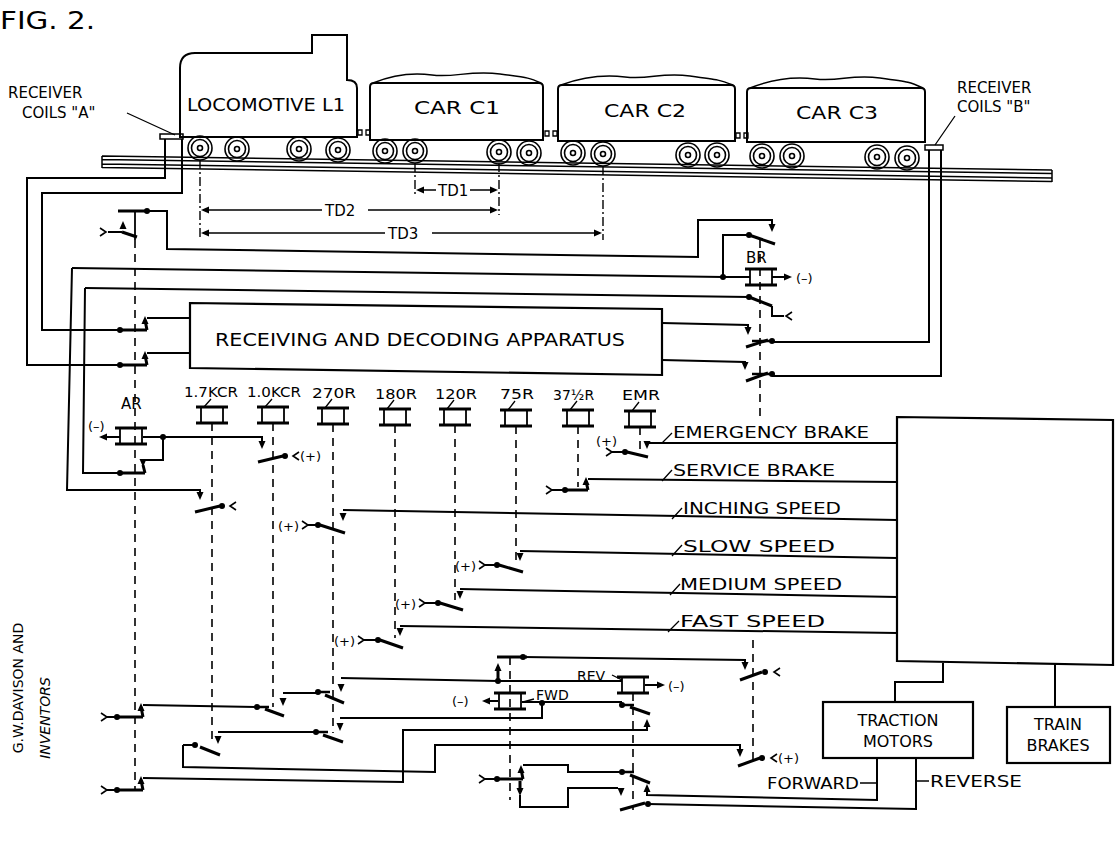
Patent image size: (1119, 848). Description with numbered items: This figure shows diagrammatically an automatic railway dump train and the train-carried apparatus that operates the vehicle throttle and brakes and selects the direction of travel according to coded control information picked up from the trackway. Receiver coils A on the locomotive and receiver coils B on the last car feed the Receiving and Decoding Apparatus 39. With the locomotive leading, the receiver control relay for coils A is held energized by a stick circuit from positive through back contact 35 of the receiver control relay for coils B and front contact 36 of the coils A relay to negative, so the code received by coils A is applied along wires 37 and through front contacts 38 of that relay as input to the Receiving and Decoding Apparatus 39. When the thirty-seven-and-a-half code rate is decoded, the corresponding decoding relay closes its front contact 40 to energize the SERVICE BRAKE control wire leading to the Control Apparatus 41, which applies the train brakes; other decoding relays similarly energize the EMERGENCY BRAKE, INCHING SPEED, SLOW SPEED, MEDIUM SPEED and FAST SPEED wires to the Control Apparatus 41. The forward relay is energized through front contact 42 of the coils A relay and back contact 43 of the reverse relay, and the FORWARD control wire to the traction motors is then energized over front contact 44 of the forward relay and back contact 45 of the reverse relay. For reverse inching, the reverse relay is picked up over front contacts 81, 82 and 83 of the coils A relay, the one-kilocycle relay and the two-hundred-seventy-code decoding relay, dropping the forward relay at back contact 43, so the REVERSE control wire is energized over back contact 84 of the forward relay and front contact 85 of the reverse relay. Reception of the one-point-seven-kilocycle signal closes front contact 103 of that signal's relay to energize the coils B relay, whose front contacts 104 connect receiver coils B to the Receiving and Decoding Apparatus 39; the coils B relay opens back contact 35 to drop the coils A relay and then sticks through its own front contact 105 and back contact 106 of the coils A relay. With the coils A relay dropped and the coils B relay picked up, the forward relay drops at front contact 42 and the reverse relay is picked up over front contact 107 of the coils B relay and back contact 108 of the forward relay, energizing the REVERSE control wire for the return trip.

The back contact of receiver control relay BR 35 is at (449, 303).
The front contact of relay AR 36 is at (150, 474).
The wires 37 is at (58, 364).
The front contacts of relay AR 38 is at (139, 349).
The Receiving and Decoding Apparatus 39 is at (662, 324).
The front contact of decoding relay 37½ 40 is at (590, 487).
The Control Apparatus 41 is at (993, 418).
The front contact of receiver control relay AR 42 is at (146, 786).
The back contact of reverse relay REV 43 is at (652, 716).
The front contact of relay FWD 44 is at (526, 770).
The back contact of relay REV 45 is at (652, 790).
The front contact of relay AR 81 is at (146, 712).
The front contact of relay 1.0 KC 82 is at (284, 699).
The front contact of relay 270R 83 is at (346, 683).
The back contact of relay FWD 84 is at (521, 801).
The front contact of relay REV 85 is at (616, 801).
The front contact of relay 1.7 KCR 103 is at (197, 500).
The front contacts of relay BR 104 is at (748, 373).
The front contact of relay BR 105 is at (776, 227).
The back contact of relay AR 106 is at (131, 223).
The front contact of relay BR 107 is at (746, 673).
The back contact of relay FWD 108 is at (496, 672).